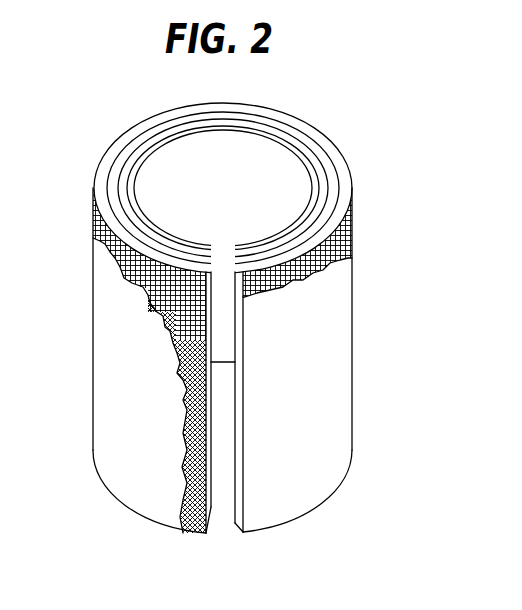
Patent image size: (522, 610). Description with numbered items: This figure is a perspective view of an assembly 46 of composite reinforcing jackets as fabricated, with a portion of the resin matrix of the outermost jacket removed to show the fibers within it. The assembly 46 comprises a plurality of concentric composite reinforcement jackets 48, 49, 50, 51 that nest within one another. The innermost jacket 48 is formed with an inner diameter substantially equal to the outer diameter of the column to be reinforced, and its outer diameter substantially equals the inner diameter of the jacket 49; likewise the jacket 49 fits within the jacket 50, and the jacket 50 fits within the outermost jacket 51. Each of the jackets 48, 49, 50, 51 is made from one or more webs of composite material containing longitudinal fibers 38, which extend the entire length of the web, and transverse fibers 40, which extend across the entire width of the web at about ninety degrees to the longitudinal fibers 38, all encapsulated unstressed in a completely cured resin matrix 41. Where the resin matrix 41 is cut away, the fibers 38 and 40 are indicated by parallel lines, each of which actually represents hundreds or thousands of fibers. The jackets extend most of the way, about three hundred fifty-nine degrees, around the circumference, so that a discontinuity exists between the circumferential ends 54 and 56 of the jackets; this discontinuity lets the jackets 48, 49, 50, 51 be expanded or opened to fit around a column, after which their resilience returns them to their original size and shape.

The assembly 46 is at (105, 124).
The innermost jacket 48 is at (133, 183).
The jacket 49 is at (125, 203).
The jacket 50 is at (110, 247).
The jacket 51 is at (107, 273).
The resin matrix 41 is at (158, 330).
The longitudinal fibers 38 is at (168, 338).
The transverse fibers 40 is at (182, 384).
The circumferential end 56 is at (225, 305).
The circumferential end 54 is at (212, 504).